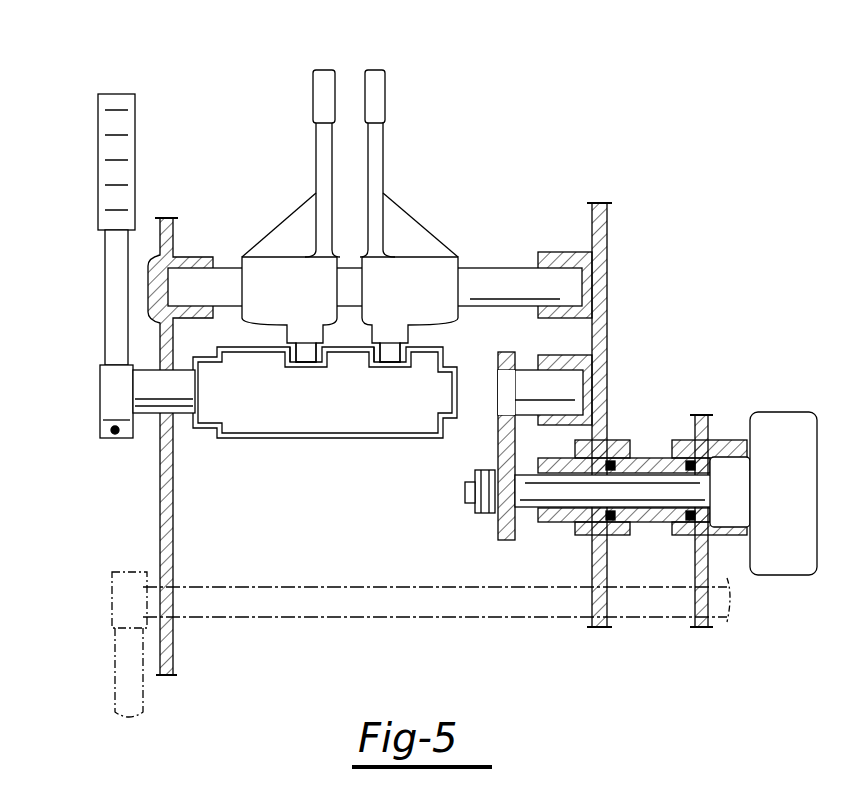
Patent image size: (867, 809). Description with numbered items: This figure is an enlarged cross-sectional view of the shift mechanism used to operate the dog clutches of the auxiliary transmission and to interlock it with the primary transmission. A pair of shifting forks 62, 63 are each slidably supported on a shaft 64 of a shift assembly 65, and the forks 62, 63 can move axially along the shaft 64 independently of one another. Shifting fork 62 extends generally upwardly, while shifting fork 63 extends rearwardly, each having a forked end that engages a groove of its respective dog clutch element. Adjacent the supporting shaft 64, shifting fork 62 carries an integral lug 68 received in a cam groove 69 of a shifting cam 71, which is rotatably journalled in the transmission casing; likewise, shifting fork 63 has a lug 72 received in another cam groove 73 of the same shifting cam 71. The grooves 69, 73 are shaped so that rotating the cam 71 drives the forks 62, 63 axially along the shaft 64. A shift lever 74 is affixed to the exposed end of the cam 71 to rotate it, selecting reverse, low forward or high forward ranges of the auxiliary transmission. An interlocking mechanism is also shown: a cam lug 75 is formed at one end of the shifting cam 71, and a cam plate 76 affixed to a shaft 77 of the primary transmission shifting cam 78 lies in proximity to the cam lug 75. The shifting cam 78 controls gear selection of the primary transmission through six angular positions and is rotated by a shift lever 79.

The shifting fork 62 is at (335, 75).
The shifting fork 63 is at (385, 75).
The shaft 64 is at (508, 275).
The shift assembly 65 is at (452, 188).
The lug 68 is at (310, 360).
The cam groove 69 is at (292, 357).
The shifting cam 71 is at (285, 440).
The lug 72 is at (395, 360).
The cam groove 73 is at (380, 360).
The shift lever 74 is at (105, 255).
The cam lug 75 is at (498, 430).
The cam plate 76 is at (512, 530).
The shaft 77 is at (662, 468).
The shifting cam 78 is at (777, 420).
The shift lever 79 is at (113, 670).